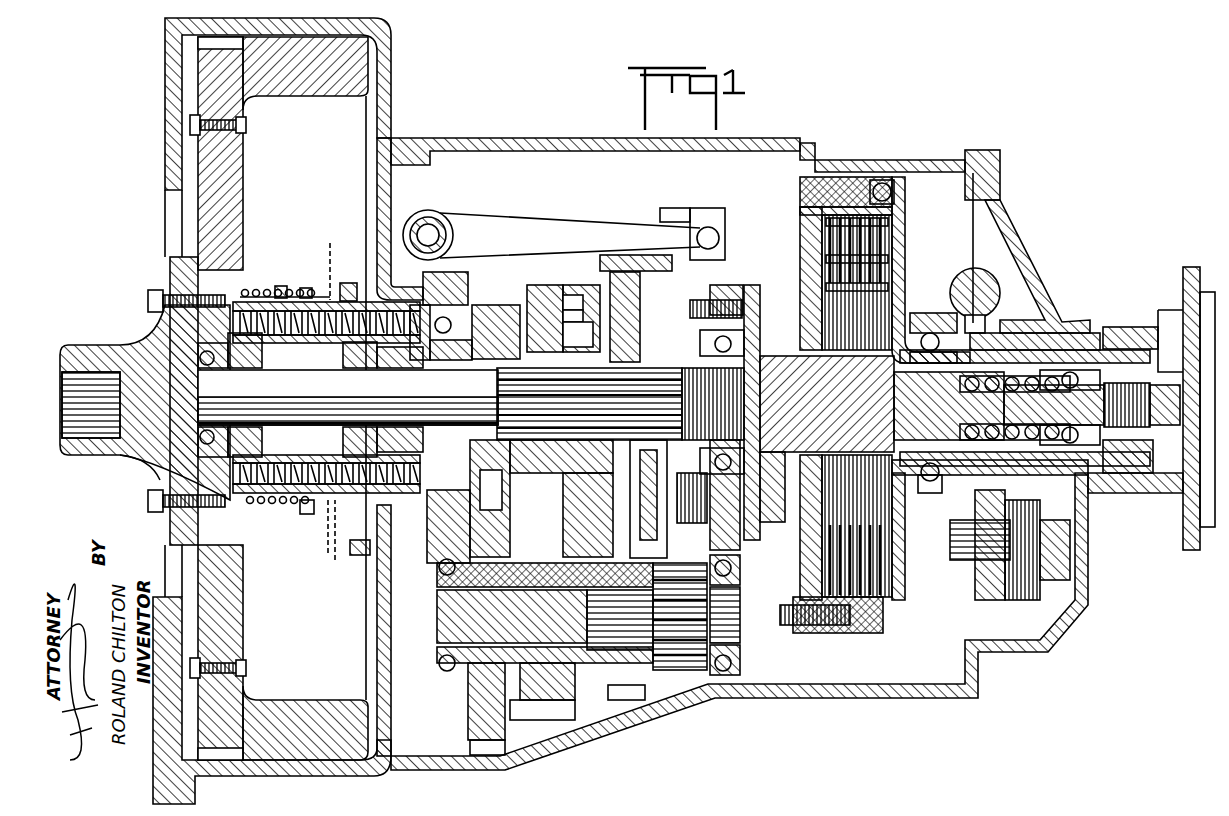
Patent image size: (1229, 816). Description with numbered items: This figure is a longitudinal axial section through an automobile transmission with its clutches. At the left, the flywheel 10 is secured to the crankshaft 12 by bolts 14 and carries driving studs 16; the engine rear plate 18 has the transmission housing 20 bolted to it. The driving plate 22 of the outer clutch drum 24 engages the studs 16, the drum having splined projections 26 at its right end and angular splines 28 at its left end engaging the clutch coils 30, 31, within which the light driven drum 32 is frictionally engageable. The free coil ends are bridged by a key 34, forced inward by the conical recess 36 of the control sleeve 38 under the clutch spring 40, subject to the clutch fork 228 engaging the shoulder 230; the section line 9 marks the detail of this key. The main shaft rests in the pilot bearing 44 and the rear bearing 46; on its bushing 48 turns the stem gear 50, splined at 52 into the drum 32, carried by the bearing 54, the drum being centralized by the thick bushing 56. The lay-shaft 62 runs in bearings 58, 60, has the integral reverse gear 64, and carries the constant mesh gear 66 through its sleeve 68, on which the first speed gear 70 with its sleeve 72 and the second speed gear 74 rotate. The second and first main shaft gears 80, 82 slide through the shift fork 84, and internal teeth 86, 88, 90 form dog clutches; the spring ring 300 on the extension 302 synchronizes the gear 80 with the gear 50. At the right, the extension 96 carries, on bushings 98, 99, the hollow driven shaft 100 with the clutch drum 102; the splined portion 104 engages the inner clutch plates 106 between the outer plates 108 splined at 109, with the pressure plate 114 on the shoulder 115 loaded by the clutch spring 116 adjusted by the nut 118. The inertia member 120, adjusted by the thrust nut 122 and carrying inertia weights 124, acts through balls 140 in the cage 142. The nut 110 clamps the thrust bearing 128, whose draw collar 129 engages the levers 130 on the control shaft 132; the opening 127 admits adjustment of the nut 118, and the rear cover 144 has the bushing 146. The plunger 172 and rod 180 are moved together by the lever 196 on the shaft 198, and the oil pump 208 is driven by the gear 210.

The section line 9- 9 is at (317, 246).
The flywheel 10 is at (325, 86).
The crankshaft 12 is at (150, 346).
The bolts 14 is at (155, 282).
The driving studs 16 is at (190, 125).
The rear plate 18 is at (164, 66).
The transmission housing 20 is at (392, 102).
The driving plate 22 is at (243, 166).
The outer clutch drum 24 is at (372, 304).
The splined projections 26 is at (415, 372).
The angular splines 28 is at (256, 289).
The clutch coil 30 is at (262, 505).
The clutch coil 31 is at (384, 494).
The driven drum 32 is at (276, 395).
The key 34 is at (310, 514).
The conical recess 36 is at (348, 283).
The control sleeve 38 is at (306, 288).
The clutch spring 40 is at (280, 288).
The pilot bearing 44 is at (158, 462).
The rear bearing 46 is at (742, 478).
The bushing 48 is at (565, 404).
The stem gear 50 is at (480, 305).
The spline 52 is at (382, 370).
The bearing 54 is at (465, 274).
The thick bushing 56 is at (244, 400).
The bearing 58 is at (438, 640).
The bearing 60 is at (750, 686).
The lay-shaft 62 is at (745, 610).
The reverse gear 64 is at (725, 574).
The constant mesh gear 66 is at (478, 756).
The gear sleeve 68 is at (650, 668).
The first speed lay-shaft gear 70 is at (630, 700).
The sleeve 72 is at (585, 680).
The second speed lay-shaft gear 74 is at (555, 722).
The second main shaft gear 80 is at (545, 290).
The first main shaft gear 82 is at (612, 257).
The shift fork 84 is at (581, 331).
The internal teeth 86 is at (470, 726).
The internal teeth 88 is at (660, 558).
The internal teeth 90 is at (575, 290).
The extension 96 is at (1170, 430).
The bushing 98 is at (999, 406).
The bushing 99 is at (1102, 494).
The driven shaft 100 is at (1125, 328).
The clutch drum 102 is at (905, 243).
The enlarged splined portion 104 is at (745, 332).
The inner clutch plates 106 is at (880, 290).
The outer clutch plates 108 is at (890, 262).
The spline 109 is at (890, 230).
The nut 110 is at (1135, 506).
The pressure plate 114 is at (805, 225).
The shoulder 115 is at (770, 505).
The clutch spring 116 is at (1080, 340).
The nut 118 is at (1146, 494).
The inertia member 120 is at (883, 180).
The thrust nut 122 is at (745, 302).
The inertia weights 124 is at (828, 180).
The opening 127 is at (1174, 346).
The thrust bearing 128 is at (928, 494).
The draw collar 129 is at (950, 540).
The levers 130 is at (992, 400).
The control shaft 132 is at (980, 282).
The balls 140 is at (905, 190).
The cage 142 is at (905, 172).
The rear cover 144 is at (1037, 266).
The bushing 146 is at (1060, 326).
The plunger 172 is at (702, 208).
The rod 180 is at (665, 208).
The lever 196 is at (506, 212).
The shaft 198 is at (432, 212).
The oil pump 208 is at (1008, 603).
The gear 210 is at (975, 572).
The clutch fork 228 is at (370, 556).
The shoulder 230 is at (336, 562).
The spring ring 300 is at (586, 294).
The extension 302 is at (586, 308).